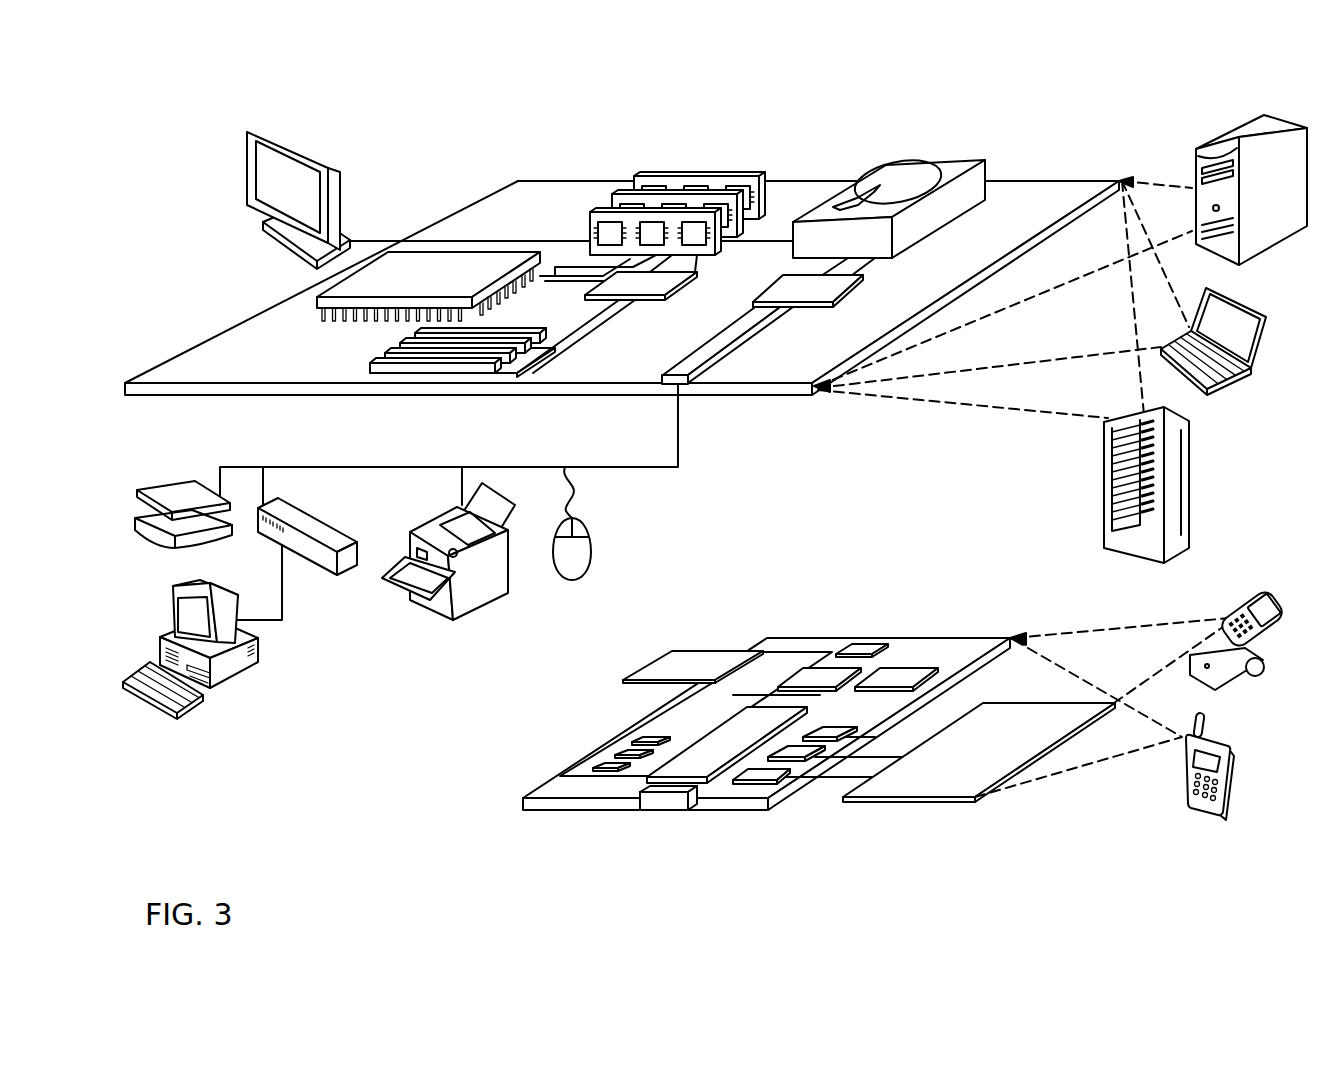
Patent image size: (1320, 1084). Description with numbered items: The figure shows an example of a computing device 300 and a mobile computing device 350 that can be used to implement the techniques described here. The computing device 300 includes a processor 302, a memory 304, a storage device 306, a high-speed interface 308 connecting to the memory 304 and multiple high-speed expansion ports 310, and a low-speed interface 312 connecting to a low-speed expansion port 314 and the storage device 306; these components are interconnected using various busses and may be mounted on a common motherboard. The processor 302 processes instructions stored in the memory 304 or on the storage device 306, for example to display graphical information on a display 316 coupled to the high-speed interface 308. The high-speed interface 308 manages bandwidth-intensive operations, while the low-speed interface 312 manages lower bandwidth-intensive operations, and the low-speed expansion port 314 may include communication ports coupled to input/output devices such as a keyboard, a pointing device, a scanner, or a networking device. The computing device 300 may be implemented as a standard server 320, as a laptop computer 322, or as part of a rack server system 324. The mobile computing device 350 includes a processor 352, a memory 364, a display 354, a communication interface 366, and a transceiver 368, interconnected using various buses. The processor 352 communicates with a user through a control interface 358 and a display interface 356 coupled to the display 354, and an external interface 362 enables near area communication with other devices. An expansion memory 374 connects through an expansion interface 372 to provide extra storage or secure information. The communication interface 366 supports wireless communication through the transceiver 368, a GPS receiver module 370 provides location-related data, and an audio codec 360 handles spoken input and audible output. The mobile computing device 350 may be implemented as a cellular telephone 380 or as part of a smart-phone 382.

The computing device 300 is at (440, 150).
The processor 302 is at (320, 298).
The memory 304 is at (650, 178).
The storage device 306 is at (883, 163).
The high-speed interface 308 is at (617, 283).
The high-speed expansion ports 310 is at (393, 357).
The low-speed interface 312 is at (790, 283).
The low-speed expansion port 314 is at (700, 388).
The display 316 is at (257, 134).
The standard server 320 is at (1196, 167).
The laptop computer 322 is at (1212, 393).
The rack server system 324 is at (1104, 512).
The mobile computing device 350 is at (496, 814).
The processor 352 is at (700, 768).
The display 354 is at (937, 785).
The display interface 356 is at (770, 772).
The control interface 358 is at (800, 753).
The audio codec 360 is at (827, 733).
The external interface 362 is at (663, 810).
The memory 364 is at (612, 752).
The communication interface 366 is at (818, 675).
The transceiver 368 is at (893, 673).
The GPS receiver module 370 is at (862, 645).
The expansion interface 372 is at (727, 712).
The expansion memory 374 is at (672, 652).
The cellular telephone 380 is at (1226, 615).
The smart-phone 382 is at (1187, 752).